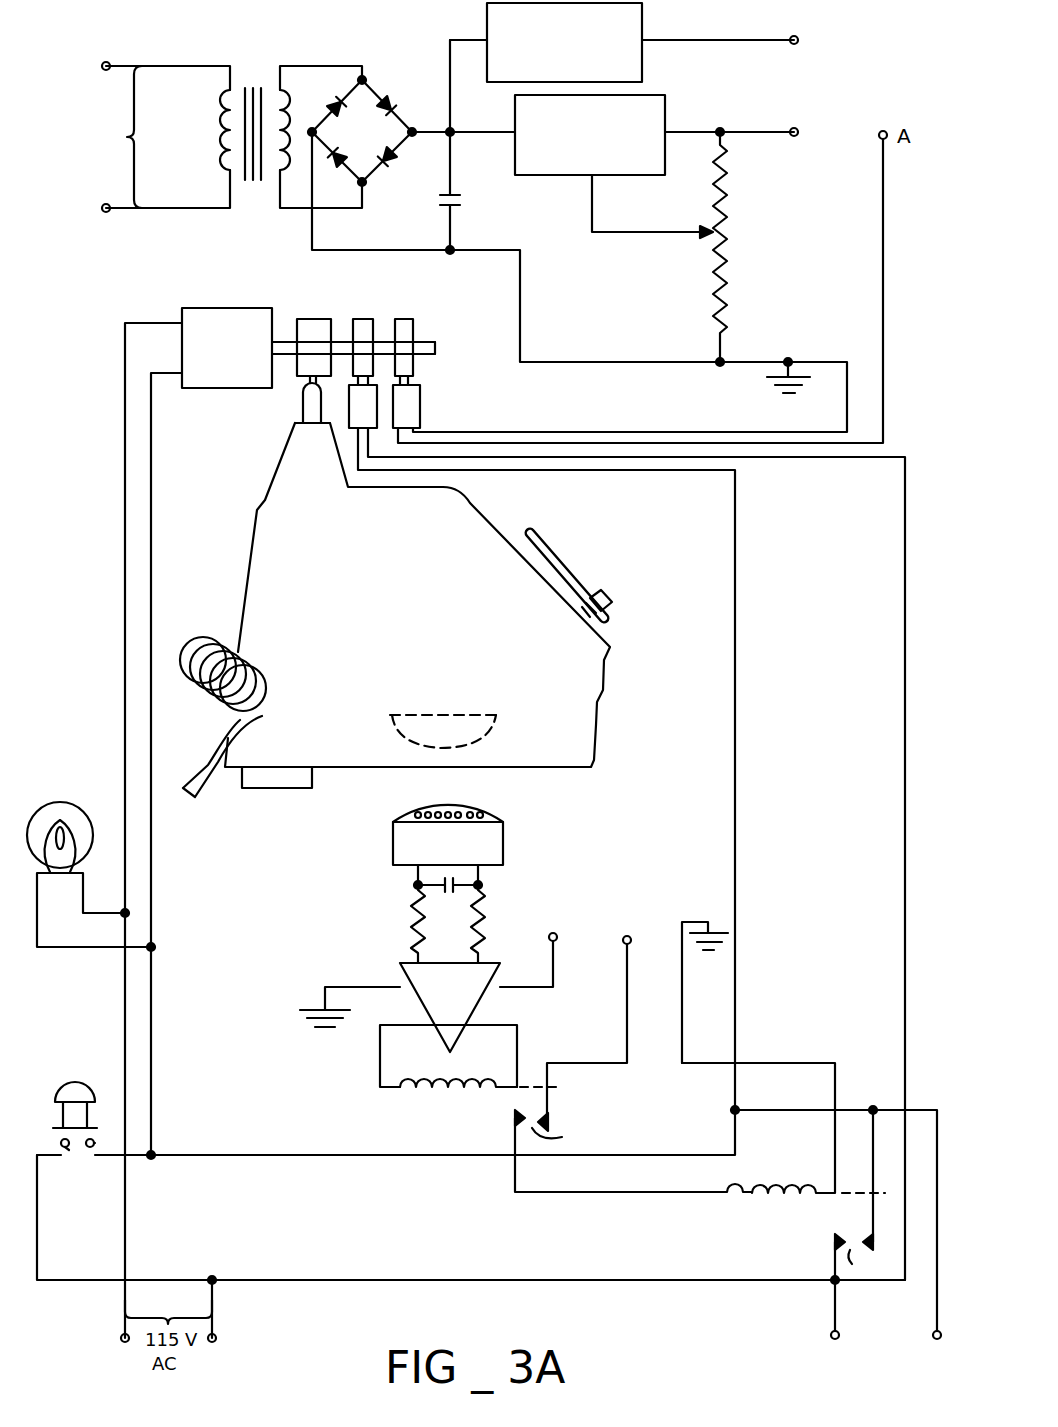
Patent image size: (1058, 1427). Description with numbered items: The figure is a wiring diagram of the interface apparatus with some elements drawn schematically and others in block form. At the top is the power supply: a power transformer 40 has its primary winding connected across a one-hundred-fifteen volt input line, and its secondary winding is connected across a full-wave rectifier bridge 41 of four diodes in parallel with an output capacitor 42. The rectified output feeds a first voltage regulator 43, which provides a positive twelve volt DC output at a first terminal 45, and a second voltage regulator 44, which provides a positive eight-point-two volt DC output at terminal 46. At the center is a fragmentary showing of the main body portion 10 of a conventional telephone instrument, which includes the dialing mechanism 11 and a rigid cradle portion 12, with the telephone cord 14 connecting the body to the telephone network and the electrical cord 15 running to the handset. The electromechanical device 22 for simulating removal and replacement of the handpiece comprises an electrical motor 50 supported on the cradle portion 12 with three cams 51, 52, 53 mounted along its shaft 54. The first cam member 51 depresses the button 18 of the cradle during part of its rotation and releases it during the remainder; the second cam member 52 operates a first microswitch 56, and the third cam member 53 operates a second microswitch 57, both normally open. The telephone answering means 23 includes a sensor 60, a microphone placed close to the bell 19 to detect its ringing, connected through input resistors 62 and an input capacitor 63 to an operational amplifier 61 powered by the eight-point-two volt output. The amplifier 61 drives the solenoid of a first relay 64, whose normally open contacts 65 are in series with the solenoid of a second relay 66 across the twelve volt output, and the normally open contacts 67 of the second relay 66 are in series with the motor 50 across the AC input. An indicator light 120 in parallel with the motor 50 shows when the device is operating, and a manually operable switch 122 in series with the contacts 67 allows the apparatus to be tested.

The main body portion 10 is at (360, 616).
The dialing mechanism 11 is at (585, 586).
The cradle portion 12 is at (300, 432).
The electrical telephone cord 14 is at (203, 777).
The electrical cord 15 is at (210, 634).
The button 18 is at (305, 402).
The bell 19 is at (483, 710).
The electromechanical device 22 is at (278, 280).
The telephone answering means 23 is at (318, 923).
The power transformer 40 is at (258, 76).
The full-wave rectifier bridge 41 is at (382, 76).
The output capacitor 42 is at (440, 202).
The first voltage regulator 43 is at (644, 15).
The second voltage regulator 44 is at (667, 96).
The first terminal 45 is at (791, 36).
The terminal 46 is at (794, 128).
The electrical motor 50 is at (208, 315).
The first cam member 51 is at (313, 323).
The second cam member 52 is at (365, 323).
The third cam member 53 is at (407, 323).
The shaft 54 is at (428, 345).
The first microswitch 56 is at (362, 414).
The second microswitch 57 is at (405, 405).
The sensor 60 is at (490, 838).
The operational amplifier 61 is at (420, 975).
The input resistors 62 is at (410, 915).
The input capacitor 63 is at (458, 895).
The first relay 64 is at (480, 1098).
The normally open contacts 65 is at (633, 1042).
The second relay 66 is at (790, 1205).
The normally open contacts 67 is at (837, 1240).
The indicator light 120 is at (75, 802).
The manually operable switch 122 is at (82, 1082).